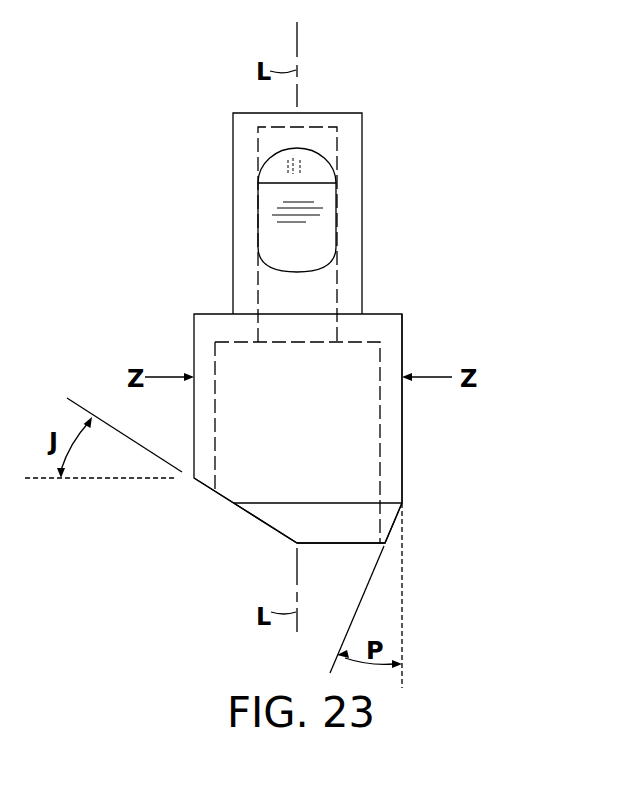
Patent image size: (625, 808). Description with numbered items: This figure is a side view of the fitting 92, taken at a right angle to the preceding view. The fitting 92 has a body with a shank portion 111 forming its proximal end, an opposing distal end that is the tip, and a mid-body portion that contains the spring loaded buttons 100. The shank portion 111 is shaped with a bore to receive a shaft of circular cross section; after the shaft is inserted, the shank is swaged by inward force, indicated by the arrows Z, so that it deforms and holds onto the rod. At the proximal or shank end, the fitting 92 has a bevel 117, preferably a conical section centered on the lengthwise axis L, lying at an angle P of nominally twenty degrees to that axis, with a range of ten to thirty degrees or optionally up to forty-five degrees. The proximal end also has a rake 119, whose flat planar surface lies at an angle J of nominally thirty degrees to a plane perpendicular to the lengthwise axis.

The fitting 92 is at (420, 437).
The spring loaded buttons 100 is at (328, 222).
The shank portion 111 is at (404, 481).
The bevel 117 is at (398, 518).
The rake 119 is at (204, 486).